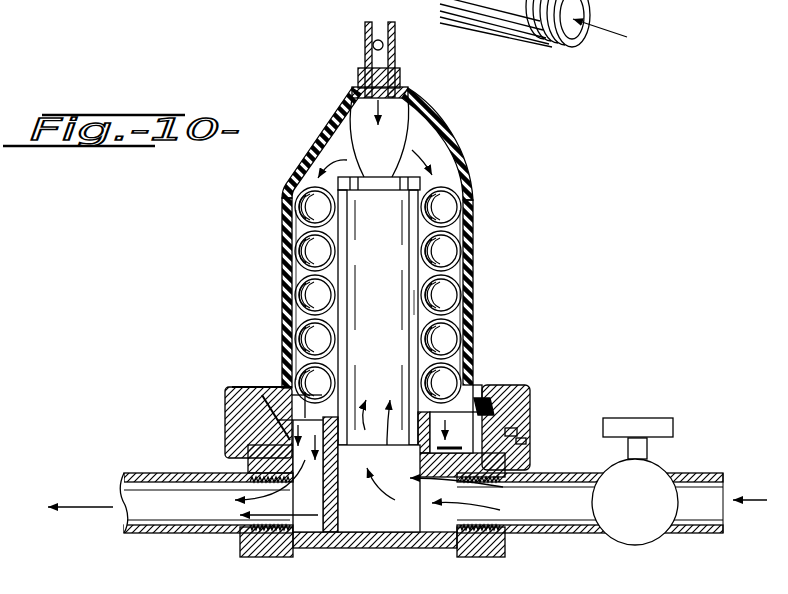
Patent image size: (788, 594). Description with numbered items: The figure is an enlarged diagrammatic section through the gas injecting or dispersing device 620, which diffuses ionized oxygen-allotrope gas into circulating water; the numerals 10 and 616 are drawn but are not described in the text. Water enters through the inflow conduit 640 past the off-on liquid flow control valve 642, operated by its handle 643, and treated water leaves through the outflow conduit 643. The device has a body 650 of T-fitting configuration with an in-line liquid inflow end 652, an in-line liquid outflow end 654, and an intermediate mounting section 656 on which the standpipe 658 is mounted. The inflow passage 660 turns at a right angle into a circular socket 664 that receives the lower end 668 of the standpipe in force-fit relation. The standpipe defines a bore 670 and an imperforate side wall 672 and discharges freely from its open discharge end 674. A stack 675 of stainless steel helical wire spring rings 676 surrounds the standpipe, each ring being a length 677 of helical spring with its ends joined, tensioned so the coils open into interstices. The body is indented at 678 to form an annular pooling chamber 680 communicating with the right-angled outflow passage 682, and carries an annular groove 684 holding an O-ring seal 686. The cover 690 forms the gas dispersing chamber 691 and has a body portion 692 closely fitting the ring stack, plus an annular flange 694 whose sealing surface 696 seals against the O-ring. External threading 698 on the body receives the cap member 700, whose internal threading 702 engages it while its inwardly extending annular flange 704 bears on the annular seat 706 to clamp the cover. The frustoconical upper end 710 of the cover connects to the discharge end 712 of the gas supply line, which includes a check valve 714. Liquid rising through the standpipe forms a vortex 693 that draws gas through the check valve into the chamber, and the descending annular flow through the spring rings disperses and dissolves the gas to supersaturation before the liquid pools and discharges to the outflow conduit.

The heat exchanger assembly 10 is at (407, 288).
The coiled inlet tubing 616 is at (382, 20).
The gas injecting or dispersing device 620 is at (478, 212).
The inflow conduit 640 is at (540, 477).
The off-on liquid flow control valve 642 is at (672, 465).
The outflow conduit 643 is at (183, 473).
The body 650 is at (508, 545).
The in-line liquid inflow end 652 is at (462, 447).
The in-line liquid outflow end 654 is at (235, 420).
The mounting section 656 is at (427, 550).
The standpipe 658 is at (413, 303).
The inflow passage 660 is at (432, 530).
The socket 664 is at (334, 536).
The lower end of standpipe 668 is at (379, 327).
The bore 670 is at (417, 133).
The side wall 672 is at (470, 185).
The discharge end 674 is at (360, 165).
The stack 675 is at (292, 183).
The helical wire spring rings 676 is at (285, 207).
The length of helical wire spring 677 is at (462, 208).
The annular indentation 678 is at (517, 427).
The annular pooling chamber 680 is at (480, 402).
The outflow passage 682 is at (250, 551).
The annular groove 684 is at (263, 420).
The O-ring seal 686 is at (280, 400).
The cover 690 is at (455, 145).
The gas dispersing chamber 691 is at (452, 140).
The body portion of cover 692 is at (470, 262).
The vortex 693 is at (377, 150).
The annular flange 694 is at (490, 413).
The sealing surface 696 is at (255, 463).
The external threading 698 is at (525, 437).
The cap member 700 is at (225, 425).
The internal threading 702 is at (245, 390).
The inwardly extending annular flange 704 is at (268, 415).
The annular seat 706 is at (487, 402).
The upper end of cover 710 is at (322, 131).
The discharge end of gas flow supply line 712 is at (393, 62).
The check valve 714 is at (362, 43).